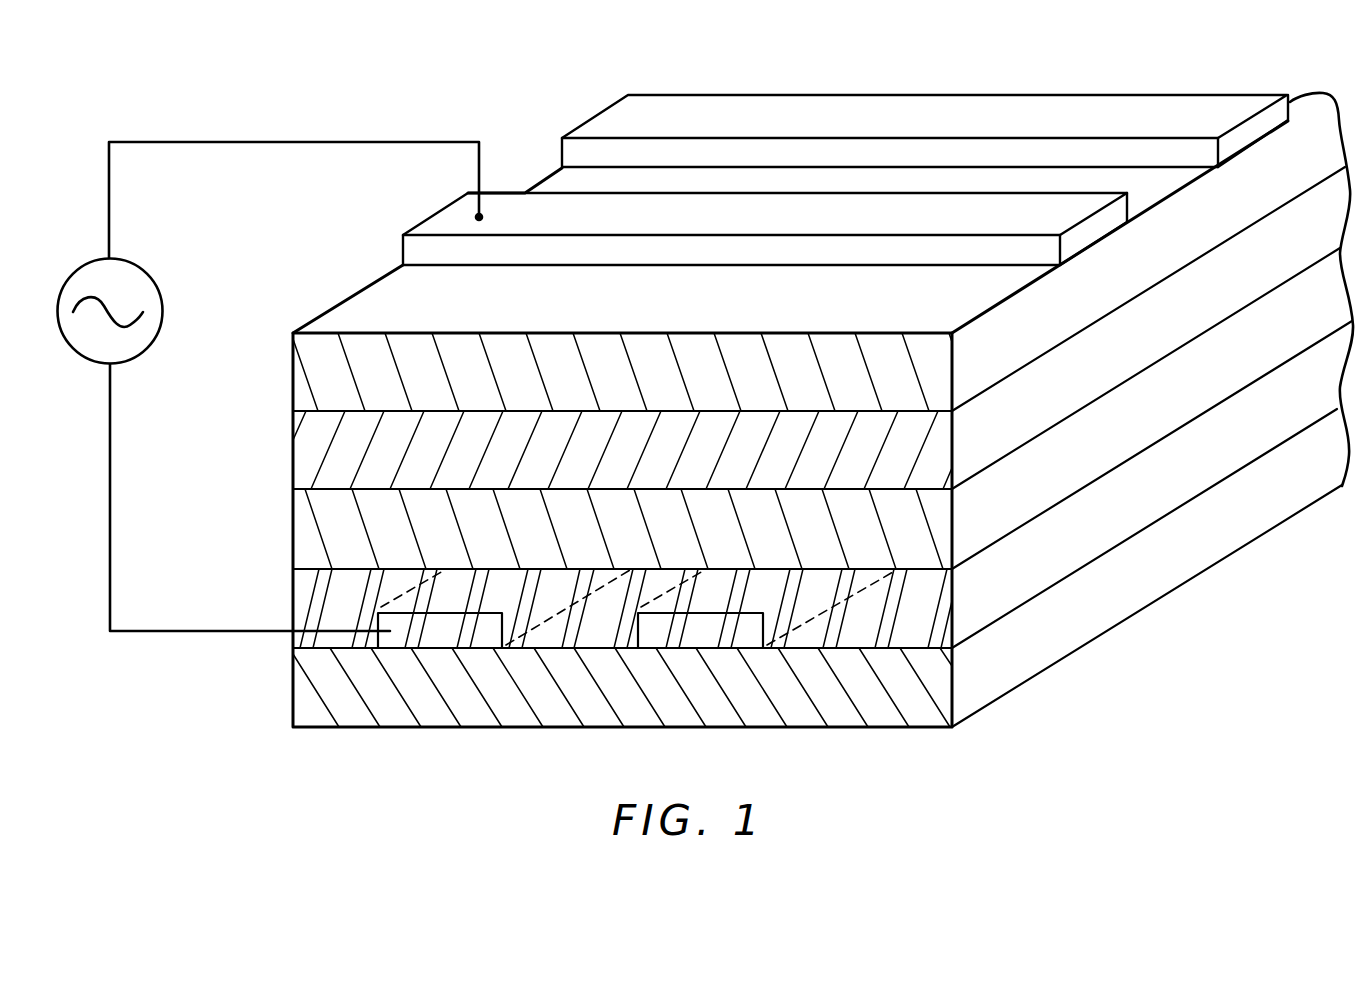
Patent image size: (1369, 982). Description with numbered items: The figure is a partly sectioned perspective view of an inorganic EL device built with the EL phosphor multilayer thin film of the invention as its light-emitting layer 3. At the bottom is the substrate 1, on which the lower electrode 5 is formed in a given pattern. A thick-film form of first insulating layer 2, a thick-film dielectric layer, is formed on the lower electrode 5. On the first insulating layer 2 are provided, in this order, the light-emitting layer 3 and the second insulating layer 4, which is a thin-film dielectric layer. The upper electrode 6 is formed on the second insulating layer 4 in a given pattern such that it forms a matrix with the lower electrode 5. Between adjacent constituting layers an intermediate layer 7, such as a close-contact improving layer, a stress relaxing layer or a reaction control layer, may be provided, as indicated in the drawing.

The substrate 1 is at (307, 695).
The first insulating layer 2 is at (307, 523).
The light-emitting layer 3 is at (295, 438).
The second insulating layer 4 is at (293, 374).
The lower electrode 5 is at (417, 640).
The upper electrode 6 is at (447, 225).
The intermediate layer 7 is at (950, 527).